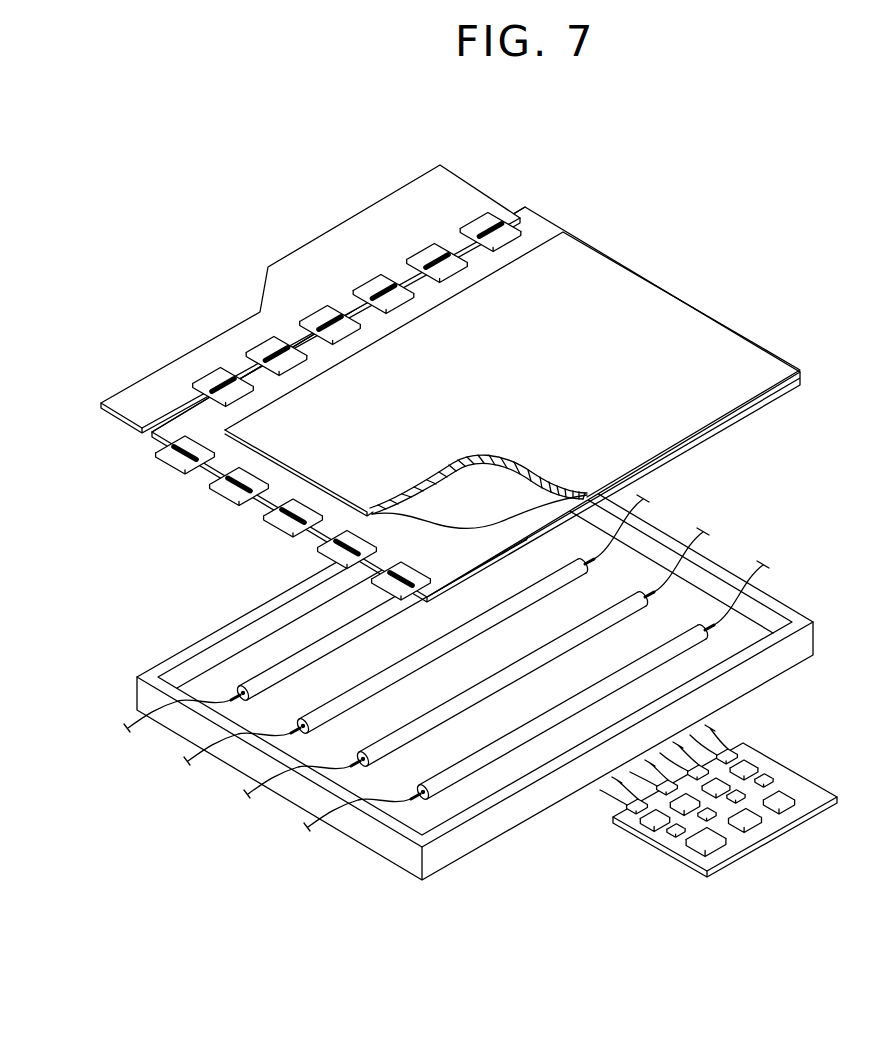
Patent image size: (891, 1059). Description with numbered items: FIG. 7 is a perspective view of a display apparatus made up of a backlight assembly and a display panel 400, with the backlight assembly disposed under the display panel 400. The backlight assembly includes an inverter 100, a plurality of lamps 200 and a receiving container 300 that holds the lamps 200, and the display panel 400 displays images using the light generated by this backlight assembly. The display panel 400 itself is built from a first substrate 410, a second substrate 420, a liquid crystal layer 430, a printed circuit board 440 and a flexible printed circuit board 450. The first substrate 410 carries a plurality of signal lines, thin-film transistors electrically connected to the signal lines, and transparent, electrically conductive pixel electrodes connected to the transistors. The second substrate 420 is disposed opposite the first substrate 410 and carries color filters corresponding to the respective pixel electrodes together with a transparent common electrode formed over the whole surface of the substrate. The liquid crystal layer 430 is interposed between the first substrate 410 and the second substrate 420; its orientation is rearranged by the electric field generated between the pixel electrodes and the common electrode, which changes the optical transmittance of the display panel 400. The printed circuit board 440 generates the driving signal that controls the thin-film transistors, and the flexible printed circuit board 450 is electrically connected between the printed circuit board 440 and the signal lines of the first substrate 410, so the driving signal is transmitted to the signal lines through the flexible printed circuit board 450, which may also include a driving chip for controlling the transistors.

The inverter 100 is at (793, 787).
The lamps 200 is at (270, 678).
The receiving container 300 is at (197, 668).
The display panel 400 is at (450, 377).
The first substrate 410 is at (522, 255).
The second substrate 420 is at (683, 315).
The liquid crystal layer 430 is at (530, 487).
The printed circuit board 440 is at (360, 382).
The flexible printed circuit board 450 is at (460, 280).